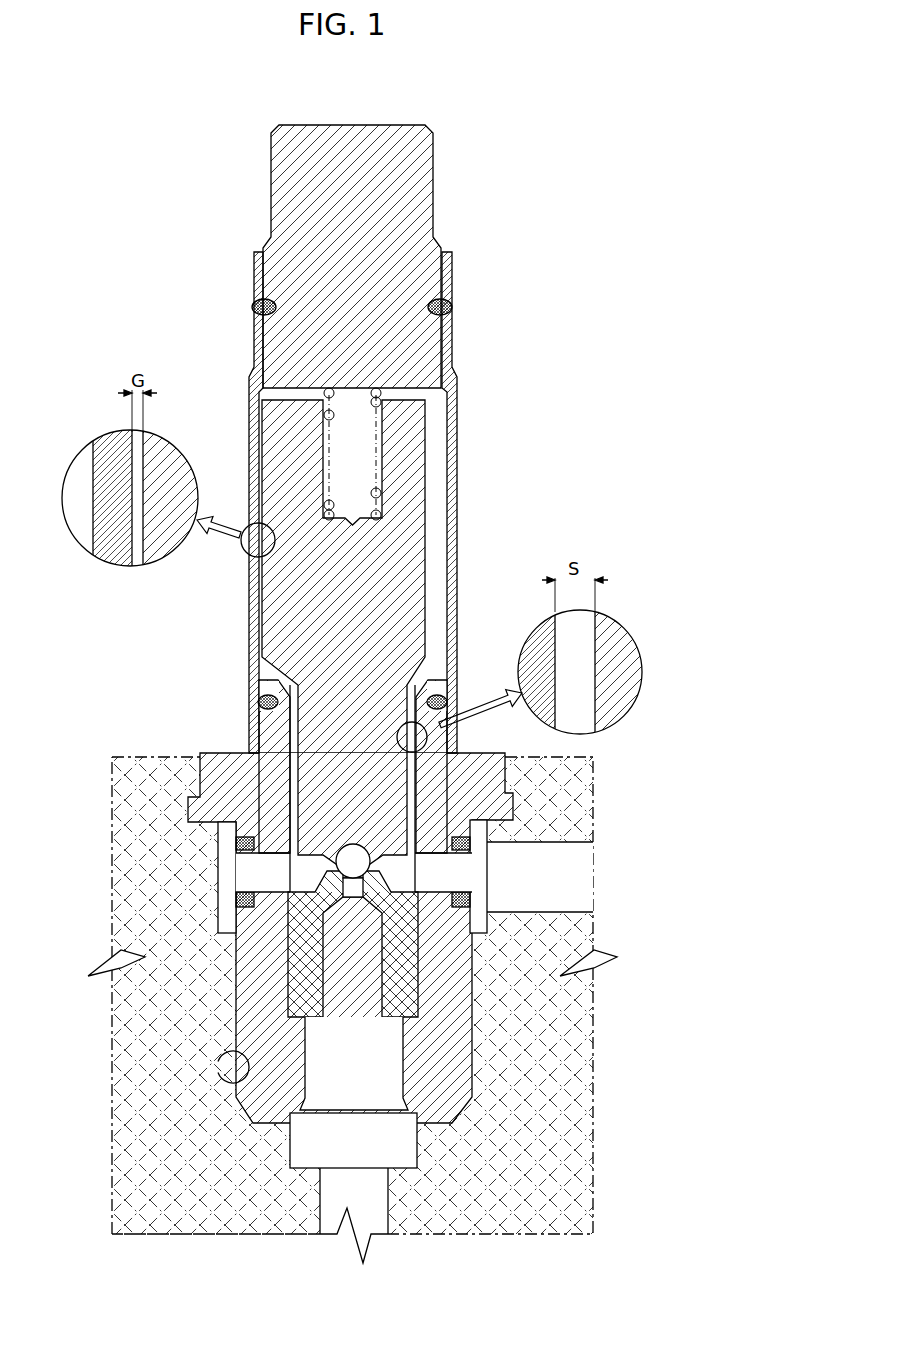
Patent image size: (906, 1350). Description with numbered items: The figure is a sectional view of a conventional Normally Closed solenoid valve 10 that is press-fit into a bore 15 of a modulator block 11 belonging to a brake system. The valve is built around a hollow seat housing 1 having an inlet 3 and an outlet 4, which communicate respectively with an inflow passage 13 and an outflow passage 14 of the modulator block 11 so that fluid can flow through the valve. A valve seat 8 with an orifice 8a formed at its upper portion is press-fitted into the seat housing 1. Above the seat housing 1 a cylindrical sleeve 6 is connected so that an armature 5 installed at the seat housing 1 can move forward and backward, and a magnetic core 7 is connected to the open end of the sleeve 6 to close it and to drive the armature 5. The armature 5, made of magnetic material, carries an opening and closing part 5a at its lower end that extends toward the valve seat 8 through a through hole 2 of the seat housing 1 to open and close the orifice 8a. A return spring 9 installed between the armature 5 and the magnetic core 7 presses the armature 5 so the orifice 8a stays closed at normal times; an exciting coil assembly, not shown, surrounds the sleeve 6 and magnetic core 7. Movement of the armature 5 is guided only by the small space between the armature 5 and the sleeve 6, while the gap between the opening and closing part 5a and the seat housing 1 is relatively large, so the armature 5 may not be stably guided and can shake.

The seat housing 1 is at (212, 755).
The through hole 2 is at (293, 745).
The inlet 3 is at (443, 885).
The outlet 4 is at (360, 1073).
The armature 5 is at (415, 570).
The opening and closing part 5a is at (341, 852).
The sleeve 6 is at (453, 524).
The magnetic core 7 is at (430, 176).
The valve seat 8 is at (236, 969).
The orifice 8a is at (352, 897).
The return spring 9 is at (370, 445).
The solenoid valve 10 is at (314, 501).
The modulator block 11 is at (140, 768).
The inflow passage 13 is at (560, 877).
The outflow passage 14 is at (375, 1204).
The bore 15 is at (232, 1073).